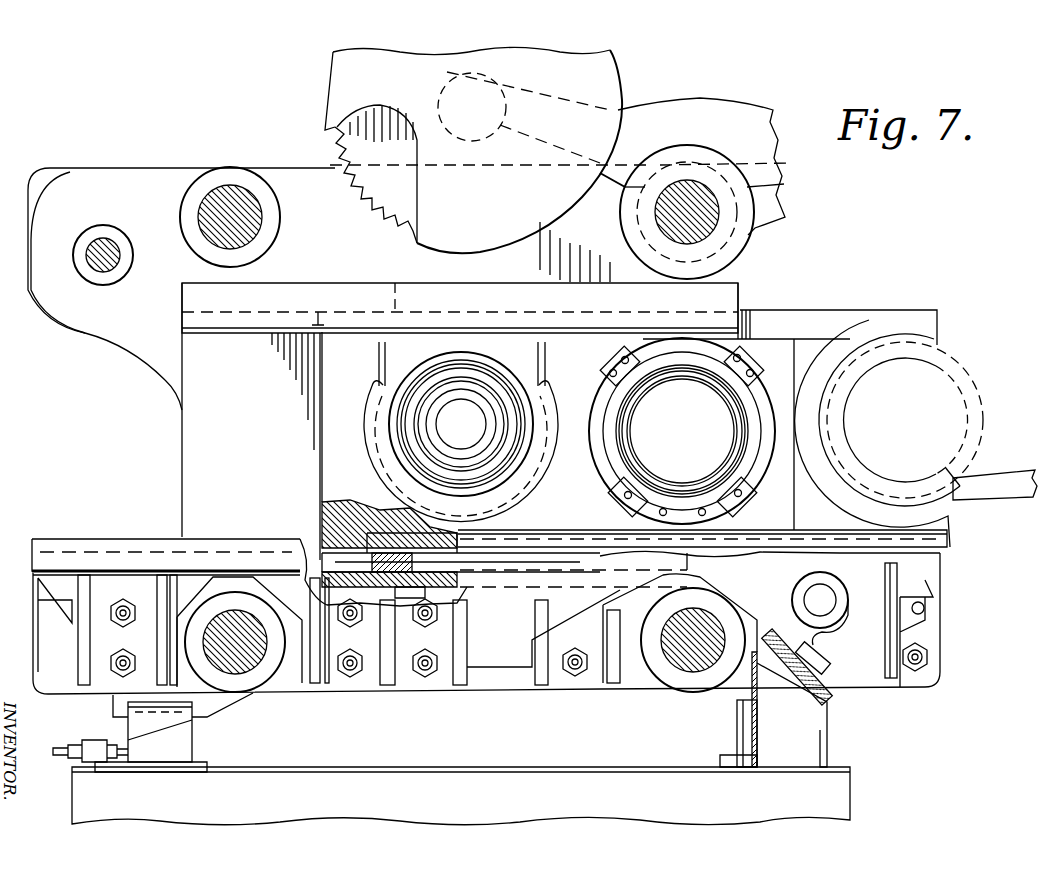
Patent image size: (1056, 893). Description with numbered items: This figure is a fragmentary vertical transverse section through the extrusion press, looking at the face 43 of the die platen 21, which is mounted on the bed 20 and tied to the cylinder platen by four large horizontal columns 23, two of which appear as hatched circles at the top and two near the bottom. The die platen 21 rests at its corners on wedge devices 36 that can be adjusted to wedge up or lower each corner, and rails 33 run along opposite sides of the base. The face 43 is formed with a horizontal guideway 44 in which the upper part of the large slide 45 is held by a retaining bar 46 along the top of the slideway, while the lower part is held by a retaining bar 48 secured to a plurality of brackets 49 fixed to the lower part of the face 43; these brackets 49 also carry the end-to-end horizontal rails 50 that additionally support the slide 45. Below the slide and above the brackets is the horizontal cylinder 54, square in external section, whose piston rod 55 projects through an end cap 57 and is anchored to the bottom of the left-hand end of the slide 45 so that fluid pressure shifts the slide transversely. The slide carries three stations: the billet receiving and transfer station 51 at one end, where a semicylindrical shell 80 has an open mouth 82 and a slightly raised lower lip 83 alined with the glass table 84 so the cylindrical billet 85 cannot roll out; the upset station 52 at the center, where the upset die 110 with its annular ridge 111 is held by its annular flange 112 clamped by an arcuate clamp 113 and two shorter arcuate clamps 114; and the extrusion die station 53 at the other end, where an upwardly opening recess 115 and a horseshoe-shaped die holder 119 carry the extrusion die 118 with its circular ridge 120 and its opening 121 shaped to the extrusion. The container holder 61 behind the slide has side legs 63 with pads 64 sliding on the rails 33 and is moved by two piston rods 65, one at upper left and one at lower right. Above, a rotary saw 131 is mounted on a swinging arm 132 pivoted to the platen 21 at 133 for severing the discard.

The bed 20 is at (575, 780).
The die platen 21 is at (100, 336).
The horizontal columns 23 is at (240, 198).
The rails 33 is at (828, 710).
The wedge devices 36 is at (192, 740).
The face of the die platen 43 is at (290, 466).
The horizontal guideway 44 is at (388, 312).
The slide 45 is at (312, 372).
The retaining bar 46 is at (324, 300).
The retaining bar 48 is at (162, 545).
The brackets 49 is at (57, 690).
The horizontal rails 50 is at (82, 575).
The billet receiving and transfer station 51 is at (963, 390).
The upset station 52 is at (766, 362).
The extrusion die station 53 is at (505, 355).
The horizontal cylinder 54 is at (451, 557).
The piston rod 55 is at (325, 512).
The end cap 57 is at (400, 592).
The container holder 61 is at (568, 550).
The side legs 63 is at (822, 640).
The pads 64 is at (825, 670).
The piston rods 65 is at (108, 245).
The semicylindrical billet receiving shell 80 is at (920, 340).
The open mouth 82 is at (925, 350).
The lower lip 83 is at (960, 472).
The glass table 84 is at (1000, 485).
The billet 85 is at (968, 415).
The upset die 110 is at (712, 403).
The annular ridge 111 is at (738, 444).
The annular flange 112 is at (625, 470).
The arcuate clamp 113 is at (725, 506).
The arcuate clamps 114 is at (628, 339).
The upwardly opening recess 115 is at (386, 356).
The extrusion die 118 is at (510, 400).
The horseshoe-shaped die holder 119 is at (386, 476).
The circular ridge 120 is at (472, 340).
The opening 121 is at (461, 424).
The rotary saw 131 is at (345, 136).
The swinging arm 132 is at (740, 108).
The pivot 133 is at (784, 184).